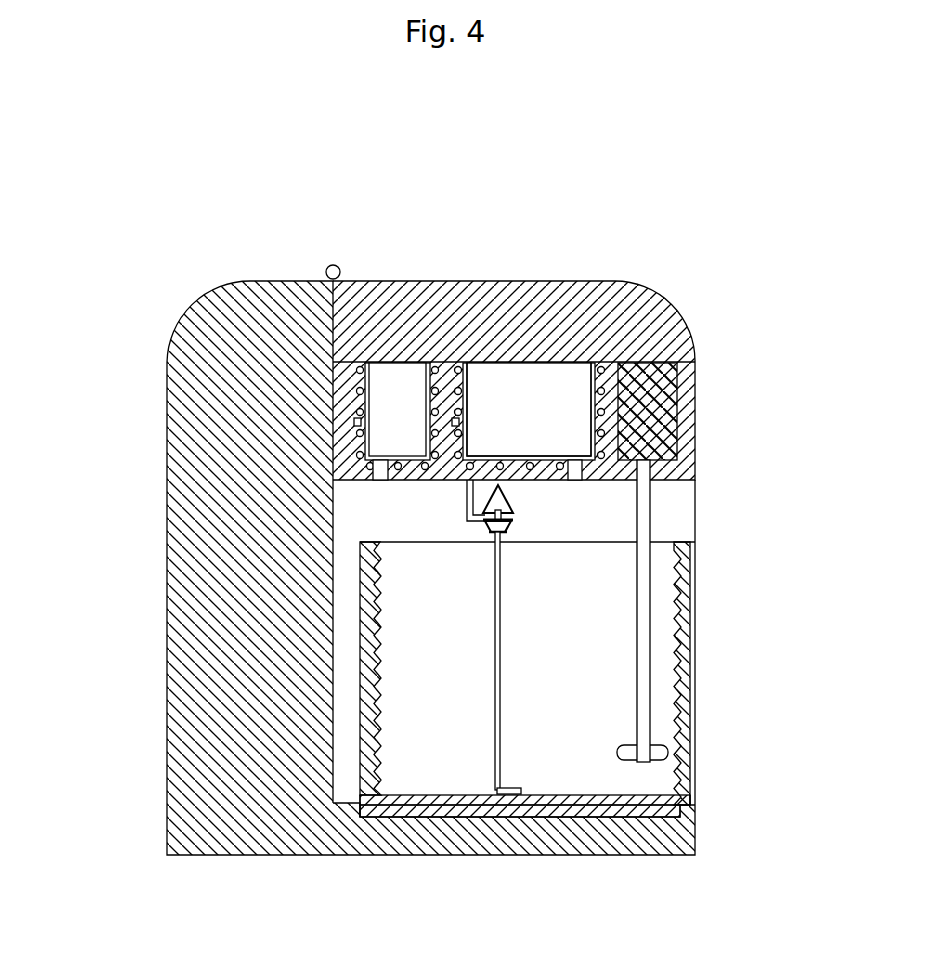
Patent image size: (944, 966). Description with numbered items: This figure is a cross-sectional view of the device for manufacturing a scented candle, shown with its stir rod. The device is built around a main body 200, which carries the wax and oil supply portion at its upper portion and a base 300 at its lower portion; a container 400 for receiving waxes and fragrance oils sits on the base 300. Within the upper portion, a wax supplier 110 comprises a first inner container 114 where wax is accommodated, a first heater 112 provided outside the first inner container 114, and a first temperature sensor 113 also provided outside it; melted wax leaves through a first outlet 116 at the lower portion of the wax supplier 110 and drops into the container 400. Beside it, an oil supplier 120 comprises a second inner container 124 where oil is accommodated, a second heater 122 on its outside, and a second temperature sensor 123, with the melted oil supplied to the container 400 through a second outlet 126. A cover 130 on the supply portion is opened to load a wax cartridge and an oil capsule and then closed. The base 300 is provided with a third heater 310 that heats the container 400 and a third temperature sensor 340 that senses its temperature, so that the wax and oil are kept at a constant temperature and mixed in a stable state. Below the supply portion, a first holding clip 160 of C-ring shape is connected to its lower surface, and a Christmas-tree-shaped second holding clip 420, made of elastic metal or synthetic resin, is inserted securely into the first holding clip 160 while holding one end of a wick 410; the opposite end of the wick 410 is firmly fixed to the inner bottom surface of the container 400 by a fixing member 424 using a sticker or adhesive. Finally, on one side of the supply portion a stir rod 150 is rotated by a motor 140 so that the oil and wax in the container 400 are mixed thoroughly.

The wax supplier 110 is at (478, 210).
The first heater 112 is at (604, 377).
The first temperature sensor 113 is at (460, 423).
The first inner container 114 is at (536, 382).
The first outlet 116 is at (577, 458).
The oil supplier 120 is at (78, 347).
The second heater 122 is at (360, 390).
The second temperature sensor 123 is at (354, 422).
The second inner container 124 is at (381, 375).
The second outlet 126 is at (380, 480).
The cover 130 is at (398, 292).
The motor 140 is at (690, 405).
The stir rod 150 is at (648, 650).
The first holding clip 160 is at (513, 518).
The main body 200 is at (178, 661).
The base 300 is at (668, 840).
The third heater 310 is at (612, 818).
The third temperature sensor 340 is at (373, 808).
The container 400 is at (680, 772).
The wick 410 is at (500, 577).
The second holding clip 420 is at (510, 495).
The fixing member 424 is at (514, 795).